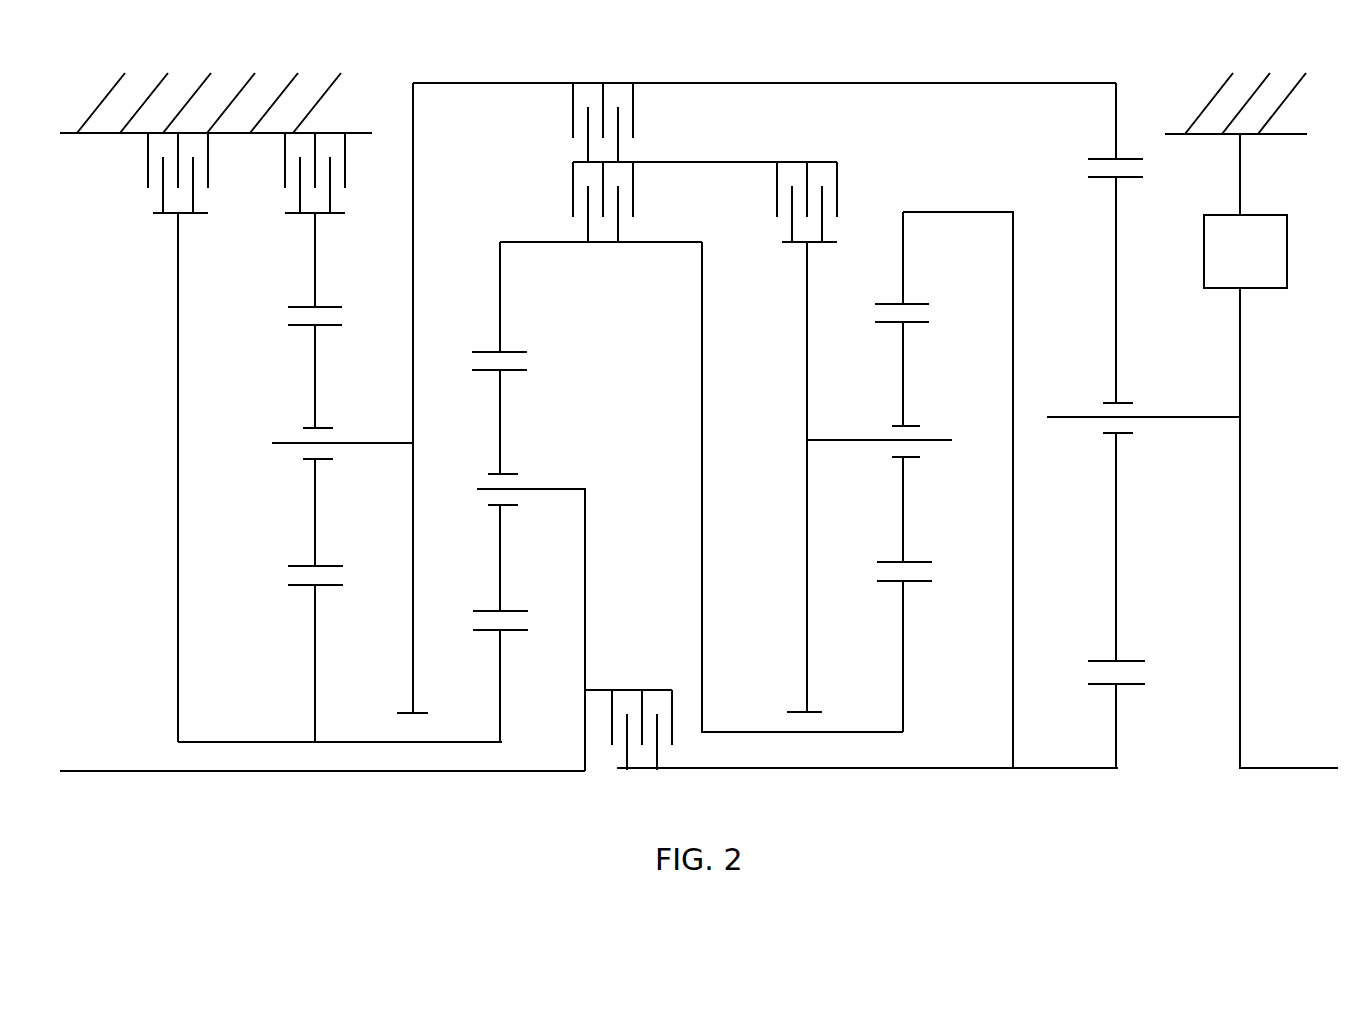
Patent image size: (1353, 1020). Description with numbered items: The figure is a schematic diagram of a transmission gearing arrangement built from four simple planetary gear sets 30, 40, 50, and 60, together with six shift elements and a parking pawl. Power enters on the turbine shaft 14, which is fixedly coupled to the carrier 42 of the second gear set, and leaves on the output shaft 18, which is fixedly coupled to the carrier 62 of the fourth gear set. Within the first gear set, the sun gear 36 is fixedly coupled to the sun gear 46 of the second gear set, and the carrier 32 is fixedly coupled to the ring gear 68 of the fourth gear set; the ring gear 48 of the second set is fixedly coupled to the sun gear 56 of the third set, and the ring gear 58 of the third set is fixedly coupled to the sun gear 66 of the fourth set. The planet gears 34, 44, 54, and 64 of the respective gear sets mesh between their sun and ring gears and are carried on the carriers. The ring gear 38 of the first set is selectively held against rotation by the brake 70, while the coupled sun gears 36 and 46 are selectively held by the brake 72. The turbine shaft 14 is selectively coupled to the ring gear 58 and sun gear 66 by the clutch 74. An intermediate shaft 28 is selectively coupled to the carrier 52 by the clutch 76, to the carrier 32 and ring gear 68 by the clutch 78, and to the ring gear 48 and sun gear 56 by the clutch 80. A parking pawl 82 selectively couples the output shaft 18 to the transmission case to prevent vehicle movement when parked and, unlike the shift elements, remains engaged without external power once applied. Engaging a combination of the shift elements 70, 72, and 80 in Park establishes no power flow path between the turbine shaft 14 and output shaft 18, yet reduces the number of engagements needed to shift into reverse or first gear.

The turbine shaft 14 is at (170, 771).
The output shaft 18 is at (1302, 768).
The intermediate shaft 28 is at (740, 165).
The planetary gear set 30 is at (340, 487).
The carrier 32 is at (413, 260).
The first planet gears 34 is at (317, 383).
The sun gear 36 is at (315, 625).
The ring gear 38 is at (317, 268).
The planetary gear set 40 is at (504, 537).
The carrier 42 is at (588, 582).
The second planet gears 44 is at (503, 432).
The sun gear 46 is at (498, 672).
The ring gear 48 is at (500, 315).
The planetary gear set 50 is at (881, 521).
The carrier 52 is at (807, 405).
The third planet gears 54 is at (905, 380).
The sun gear 56 is at (903, 622).
The ring gear 58 is at (903, 275).
The planetary gear set 60 is at (1143, 457).
The carrier 62 is at (1240, 462).
The fourth planet gears 64 is at (1118, 348).
The sun gear 66 is at (1118, 730).
The ring gear 68 is at (1110, 130).
The brake 70 is at (280, 157).
The brake 72 is at (147, 157).
The clutch 74 is at (652, 687).
The clutch 76 is at (788, 160).
The clutch 78 is at (573, 132).
The clutch 80 is at (573, 187).
The parking pawl 82 is at (1287, 262).